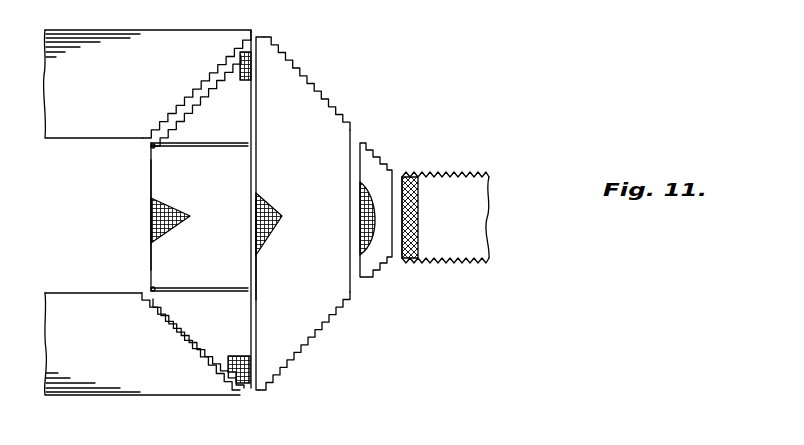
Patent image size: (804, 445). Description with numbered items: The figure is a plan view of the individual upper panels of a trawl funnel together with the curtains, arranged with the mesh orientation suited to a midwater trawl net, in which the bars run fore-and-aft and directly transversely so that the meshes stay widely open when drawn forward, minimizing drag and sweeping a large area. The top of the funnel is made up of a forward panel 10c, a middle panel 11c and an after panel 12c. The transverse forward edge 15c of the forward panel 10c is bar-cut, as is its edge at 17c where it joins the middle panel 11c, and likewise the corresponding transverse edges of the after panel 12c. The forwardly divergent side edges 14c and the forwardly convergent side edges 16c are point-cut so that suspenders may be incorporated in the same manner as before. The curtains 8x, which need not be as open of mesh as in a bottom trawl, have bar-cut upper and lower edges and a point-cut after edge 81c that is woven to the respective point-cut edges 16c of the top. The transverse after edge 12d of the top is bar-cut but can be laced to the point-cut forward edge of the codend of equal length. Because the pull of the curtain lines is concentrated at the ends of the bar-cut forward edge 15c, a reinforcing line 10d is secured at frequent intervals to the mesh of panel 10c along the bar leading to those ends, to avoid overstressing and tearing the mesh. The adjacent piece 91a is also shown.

The curtains 8x is at (130, 89).
The after edge of the curtains 81c is at (225, 72).
The forwardly divergent side edges 14c is at (372, 147).
The after panel 12c is at (374, 168).
The transverse after edge of the top 12d is at (394, 193).
The adjacent member 91a is at (473, 227).
The middle panel 11c is at (318, 168).
The forward panel 10c is at (228, 190).
The reinforcing line 10d is at (214, 143).
The transverse forward edge 15c is at (151, 180).
The edge joining the middle panel 17c is at (256, 283).
The forwardly convergent side edges 16c is at (188, 340).